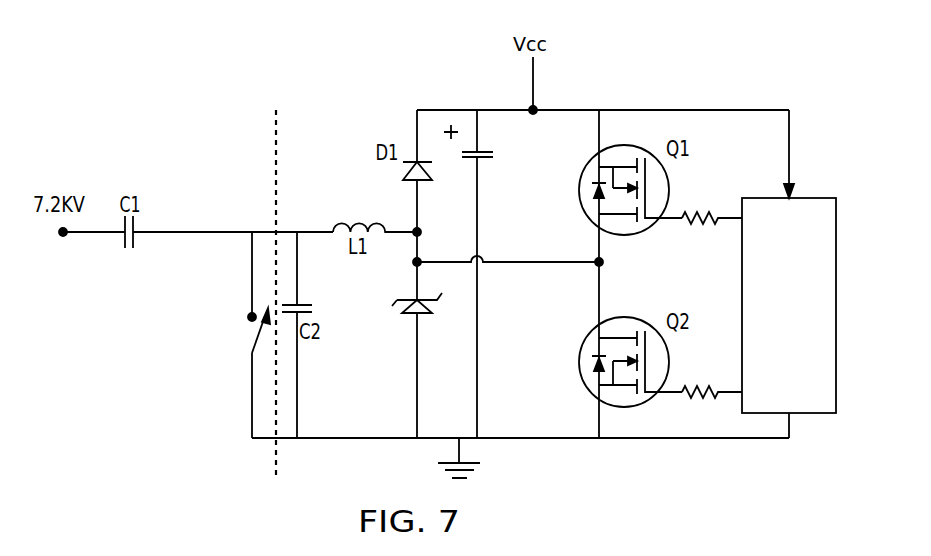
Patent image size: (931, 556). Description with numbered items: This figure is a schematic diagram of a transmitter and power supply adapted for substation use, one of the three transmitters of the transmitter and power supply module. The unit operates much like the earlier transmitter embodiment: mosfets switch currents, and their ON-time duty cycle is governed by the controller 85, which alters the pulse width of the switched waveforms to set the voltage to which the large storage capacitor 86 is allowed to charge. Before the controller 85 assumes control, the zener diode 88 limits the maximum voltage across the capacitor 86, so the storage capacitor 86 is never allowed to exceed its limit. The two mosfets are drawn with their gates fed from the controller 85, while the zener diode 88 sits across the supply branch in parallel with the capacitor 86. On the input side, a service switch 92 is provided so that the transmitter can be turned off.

The control circuitry 85 is at (742, 308).
The storage capacitor 86 is at (485, 159).
The zener diode 88 is at (415, 325).
The service switch 92 is at (214, 322).